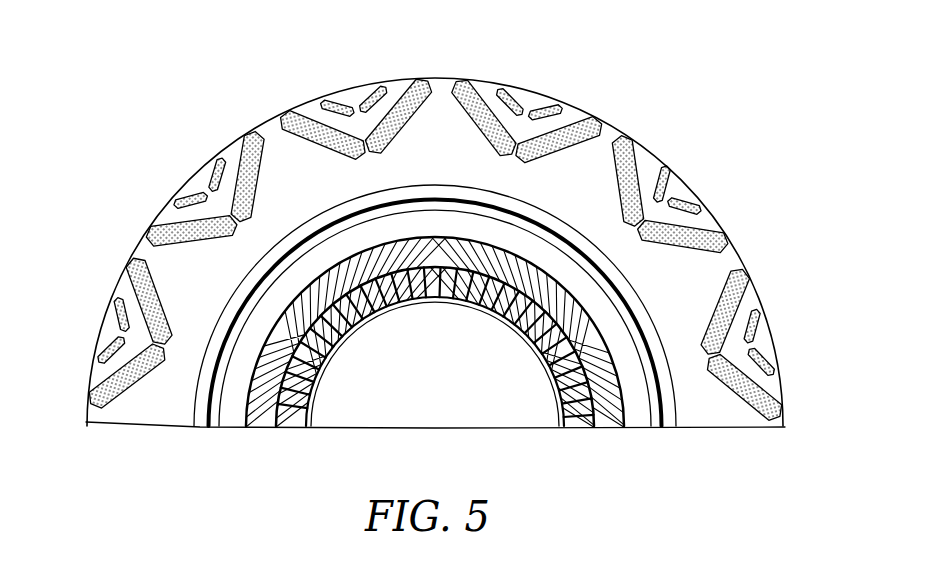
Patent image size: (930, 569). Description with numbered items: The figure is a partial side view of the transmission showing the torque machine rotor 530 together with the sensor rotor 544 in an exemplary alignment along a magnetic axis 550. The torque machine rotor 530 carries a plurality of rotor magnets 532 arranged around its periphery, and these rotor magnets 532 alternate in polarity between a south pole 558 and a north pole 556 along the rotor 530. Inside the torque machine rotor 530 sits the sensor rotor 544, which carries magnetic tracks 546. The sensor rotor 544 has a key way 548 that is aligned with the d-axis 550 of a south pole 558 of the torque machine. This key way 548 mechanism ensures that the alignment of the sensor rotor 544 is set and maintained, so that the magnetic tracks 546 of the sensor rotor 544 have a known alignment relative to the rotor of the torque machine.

The torque machine rotor 530 is at (146, 396).
The rotor magnets 532 is at (731, 400).
The sensor rotor 544 is at (242, 432).
The magnetic tracks 546 is at (245, 436).
The key way 548 is at (382, 201).
The magnetic axis (d-axis) 550 is at (443, 426).
The north pole 556 is at (156, 160).
The south pole 558 is at (355, 135).